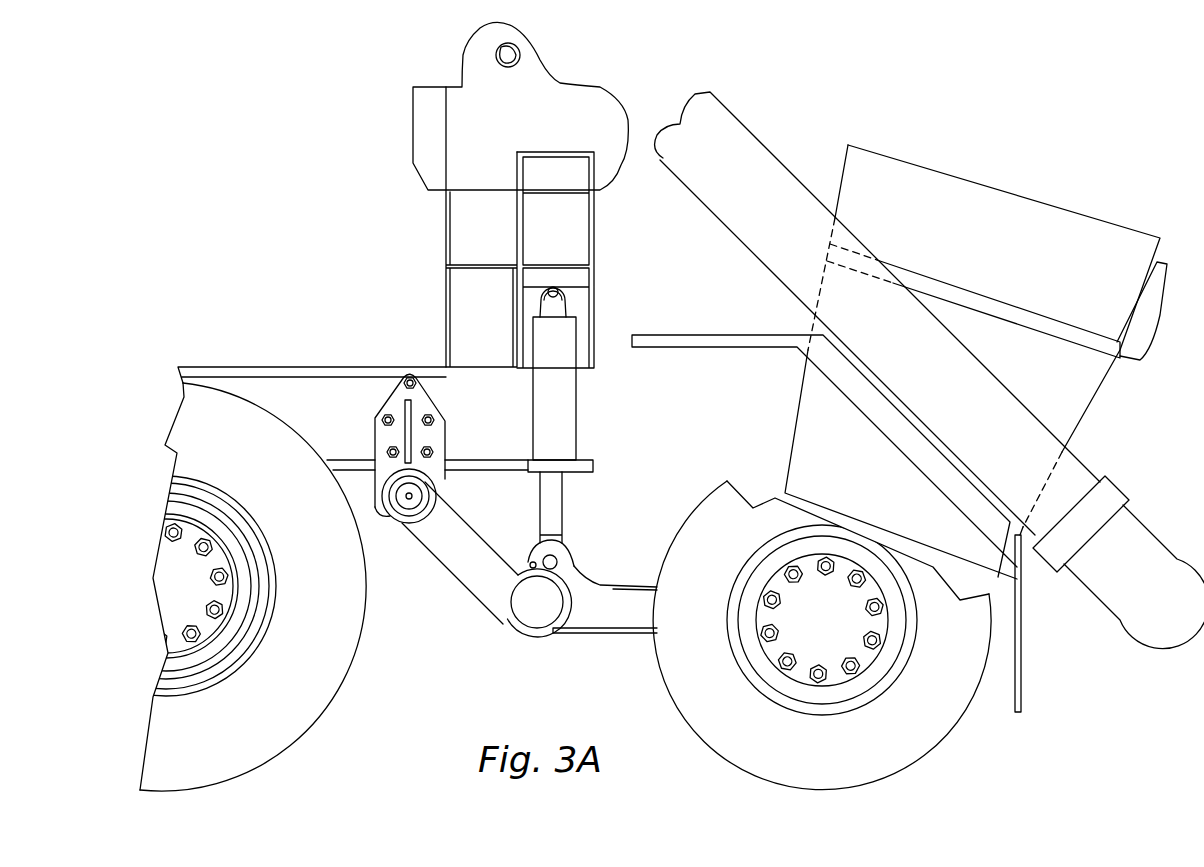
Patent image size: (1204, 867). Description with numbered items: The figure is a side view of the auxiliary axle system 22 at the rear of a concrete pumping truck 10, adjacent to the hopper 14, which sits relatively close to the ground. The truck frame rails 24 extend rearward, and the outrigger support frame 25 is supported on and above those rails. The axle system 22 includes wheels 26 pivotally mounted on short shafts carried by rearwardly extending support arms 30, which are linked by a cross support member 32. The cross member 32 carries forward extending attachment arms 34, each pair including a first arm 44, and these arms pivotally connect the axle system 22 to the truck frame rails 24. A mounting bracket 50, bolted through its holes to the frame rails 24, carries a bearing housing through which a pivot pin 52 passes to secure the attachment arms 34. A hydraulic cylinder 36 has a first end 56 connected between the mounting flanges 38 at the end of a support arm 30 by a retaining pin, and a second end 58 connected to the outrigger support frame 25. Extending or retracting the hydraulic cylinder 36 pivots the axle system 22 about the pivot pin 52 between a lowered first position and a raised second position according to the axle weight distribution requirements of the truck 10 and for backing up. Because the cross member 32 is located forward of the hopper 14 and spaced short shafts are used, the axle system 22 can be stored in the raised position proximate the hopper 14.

The concrete pumping truck 10 is at (273, 292).
The hopper 14 is at (960, 213).
The auxiliary axle system 22 is at (580, 660).
The truck frame rails 24 is at (285, 395).
The outrigger support frame 25 is at (467, 222).
The wheels 26 is at (920, 737).
The support arms 30 is at (615, 640).
The cross support member 32 is at (538, 622).
The attachment arms 34 is at (452, 584).
The hydraulic cylinders 36 is at (582, 404).
The mounting flanges 38 is at (563, 563).
The first arm 44 is at (429, 530).
The mounting brackets 50 is at (395, 410).
The pivot pin 52 is at (412, 494).
The first end 56 is at (553, 494).
The second end 58 is at (557, 313).